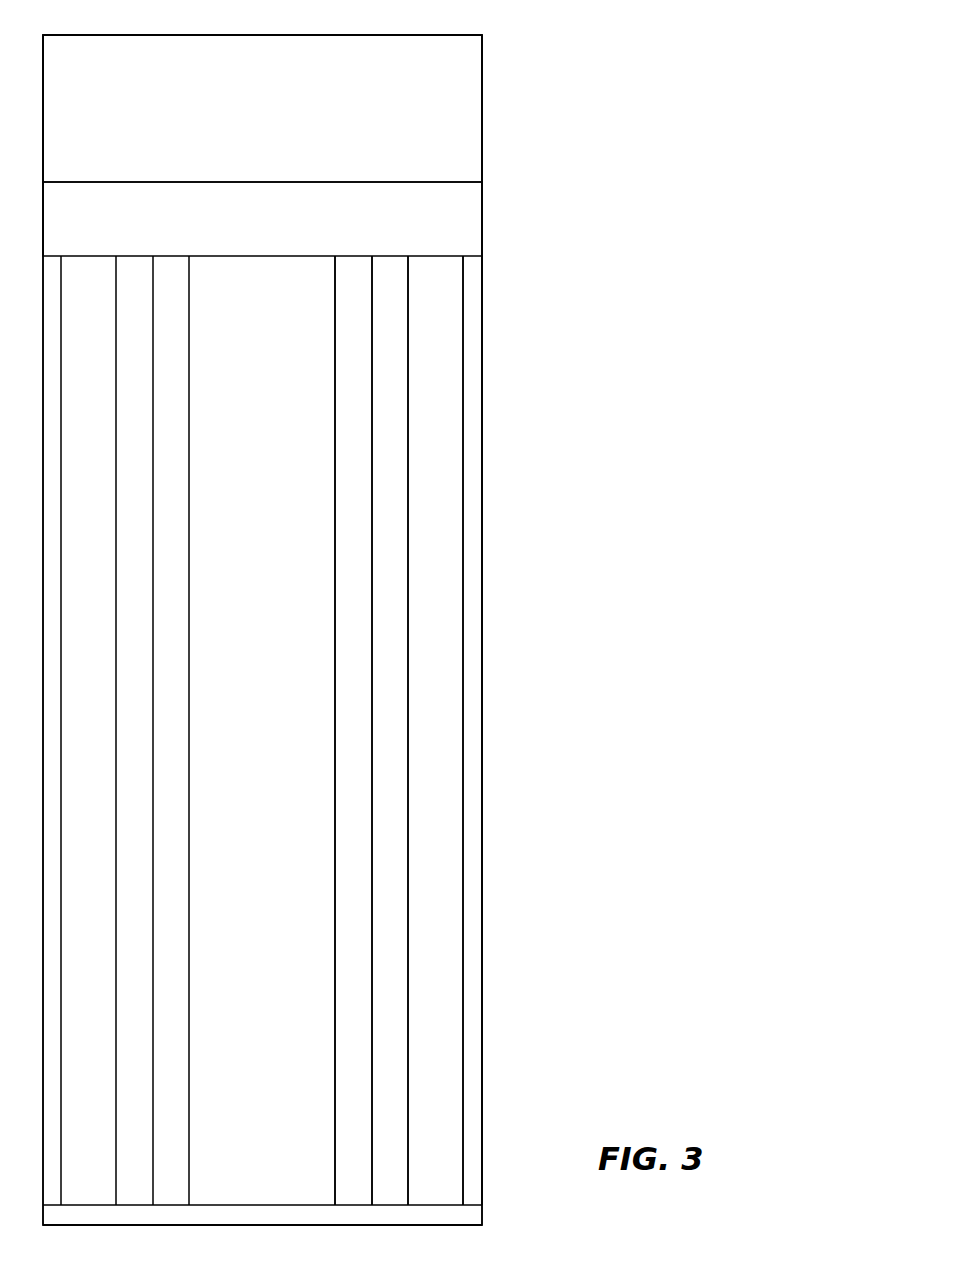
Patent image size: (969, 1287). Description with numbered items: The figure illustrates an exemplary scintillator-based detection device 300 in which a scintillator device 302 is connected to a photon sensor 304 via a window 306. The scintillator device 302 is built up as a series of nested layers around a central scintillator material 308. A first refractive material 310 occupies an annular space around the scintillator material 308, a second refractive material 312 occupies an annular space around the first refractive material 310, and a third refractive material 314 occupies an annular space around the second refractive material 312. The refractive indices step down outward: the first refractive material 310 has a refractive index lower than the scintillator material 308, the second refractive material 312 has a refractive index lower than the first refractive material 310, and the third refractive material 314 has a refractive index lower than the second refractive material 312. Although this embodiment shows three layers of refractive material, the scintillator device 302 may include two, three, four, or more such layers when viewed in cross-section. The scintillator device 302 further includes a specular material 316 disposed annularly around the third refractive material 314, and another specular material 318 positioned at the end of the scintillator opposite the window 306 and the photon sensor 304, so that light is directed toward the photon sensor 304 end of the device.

The scintillator-based detection device 300 is at (652, 218).
The scintillator device 302 is at (482, 347).
The photon sensor 304 is at (445, 91).
The window 306 is at (445, 219).
The scintillator material 308 is at (300, 475).
The first refractive material 310 is at (357, 593).
The second refractive material 312 is at (387, 673).
The third refractive material 314 is at (423, 760).
The specular material 316 is at (470, 833).
The specular material 318 is at (435, 1217).